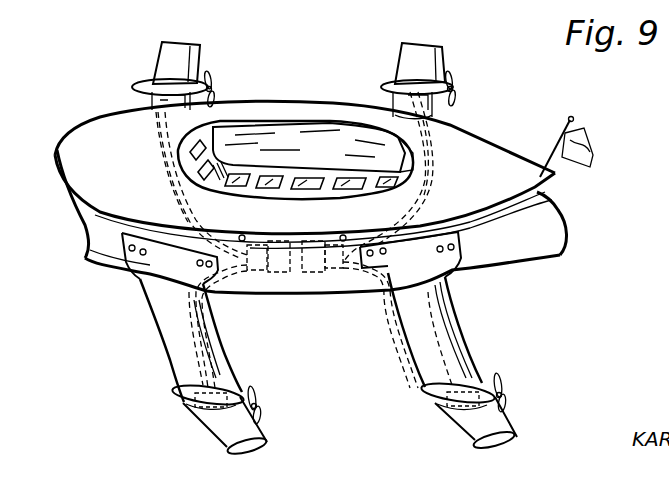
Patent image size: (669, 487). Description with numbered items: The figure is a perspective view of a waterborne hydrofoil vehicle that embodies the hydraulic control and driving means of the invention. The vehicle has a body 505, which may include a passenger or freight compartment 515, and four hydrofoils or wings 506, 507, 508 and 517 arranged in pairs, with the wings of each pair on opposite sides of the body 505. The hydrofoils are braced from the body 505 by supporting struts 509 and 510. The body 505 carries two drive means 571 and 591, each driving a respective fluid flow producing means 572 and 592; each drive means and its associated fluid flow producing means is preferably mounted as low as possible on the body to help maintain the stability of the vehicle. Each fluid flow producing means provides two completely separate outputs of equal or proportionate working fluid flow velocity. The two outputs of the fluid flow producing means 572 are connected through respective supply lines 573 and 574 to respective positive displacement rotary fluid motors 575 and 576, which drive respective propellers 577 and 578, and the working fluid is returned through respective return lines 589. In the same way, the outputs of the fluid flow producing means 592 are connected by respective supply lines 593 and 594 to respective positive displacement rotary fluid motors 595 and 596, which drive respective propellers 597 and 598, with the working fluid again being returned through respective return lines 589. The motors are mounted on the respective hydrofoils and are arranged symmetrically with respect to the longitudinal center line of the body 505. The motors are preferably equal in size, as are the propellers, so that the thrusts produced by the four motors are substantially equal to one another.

The body 505 is at (80, 140).
The hydrofoil 506 is at (153, 303).
The hydrofoil 507 is at (177, 47).
The hydrofoil 508 is at (412, 340).
The supporting strut 509 is at (187, 355).
The supporting strut 510 is at (432, 368).
The passenger or freight compartment 515 is at (233, 167).
The hydrofoil 517 is at (418, 47).
The drive means 571 is at (277, 267).
The fluid flow producing means 572 is at (250, 262).
The supply line 573 is at (160, 138).
The supply line 574 is at (200, 333).
The positive displacement rotary fluid motor 575 is at (175, 80).
The positive displacement rotary fluid motor 576 is at (217, 407).
The propeller 577 is at (213, 77).
The propeller 578 is at (261, 413).
The return line 589 is at (167, 167).
The drive means 591 is at (310, 267).
The fluid flow producing means 592 is at (337, 270).
The supply line 593 is at (425, 187).
The supply line 594 is at (448, 345).
The positive displacement rotary fluid motor 595 is at (415, 77).
The positive displacement rotary fluid motor 596 is at (458, 407).
The propeller 597 is at (453, 78).
The propeller 598 is at (508, 403).